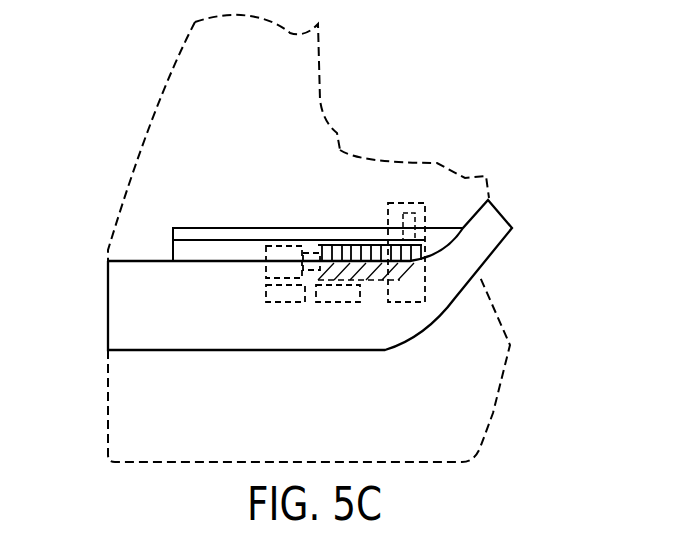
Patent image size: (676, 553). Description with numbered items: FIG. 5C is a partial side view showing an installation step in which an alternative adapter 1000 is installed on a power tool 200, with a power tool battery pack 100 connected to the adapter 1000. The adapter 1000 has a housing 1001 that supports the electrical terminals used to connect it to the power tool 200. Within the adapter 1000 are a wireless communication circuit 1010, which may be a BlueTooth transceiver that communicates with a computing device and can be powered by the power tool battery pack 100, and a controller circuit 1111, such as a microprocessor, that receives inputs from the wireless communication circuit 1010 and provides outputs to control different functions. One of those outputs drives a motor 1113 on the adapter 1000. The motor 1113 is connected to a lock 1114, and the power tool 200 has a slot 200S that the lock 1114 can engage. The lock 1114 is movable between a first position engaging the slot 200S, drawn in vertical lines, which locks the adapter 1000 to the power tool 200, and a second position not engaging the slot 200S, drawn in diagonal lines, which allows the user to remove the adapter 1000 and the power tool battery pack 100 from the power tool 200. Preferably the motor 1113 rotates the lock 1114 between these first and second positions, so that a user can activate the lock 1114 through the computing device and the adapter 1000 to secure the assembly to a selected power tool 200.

The power tool battery pack 100 is at (458, 403).
The power tool 200 is at (332, 133).
The slot 200S is at (373, 228).
The adapter 1000 is at (196, 324).
The housing 1001 is at (222, 337).
The wireless communication circuit 1010 is at (336, 296).
The controller circuit 1111 is at (287, 292).
The motor 1113 is at (263, 275).
The lock 1114 is at (423, 296).